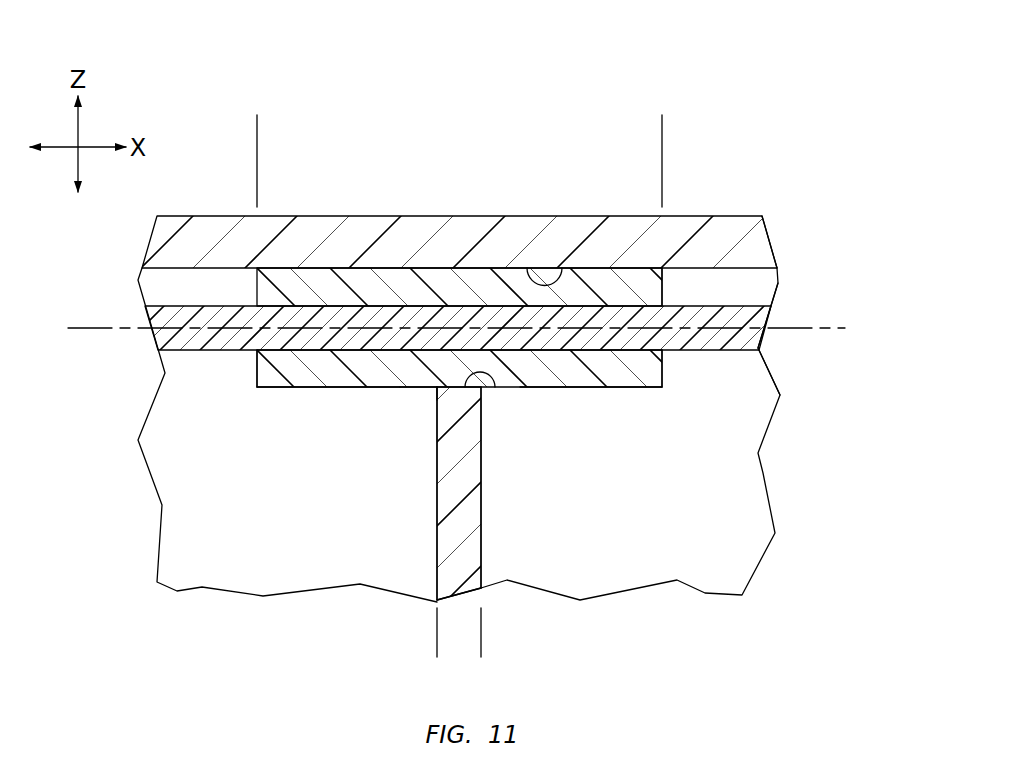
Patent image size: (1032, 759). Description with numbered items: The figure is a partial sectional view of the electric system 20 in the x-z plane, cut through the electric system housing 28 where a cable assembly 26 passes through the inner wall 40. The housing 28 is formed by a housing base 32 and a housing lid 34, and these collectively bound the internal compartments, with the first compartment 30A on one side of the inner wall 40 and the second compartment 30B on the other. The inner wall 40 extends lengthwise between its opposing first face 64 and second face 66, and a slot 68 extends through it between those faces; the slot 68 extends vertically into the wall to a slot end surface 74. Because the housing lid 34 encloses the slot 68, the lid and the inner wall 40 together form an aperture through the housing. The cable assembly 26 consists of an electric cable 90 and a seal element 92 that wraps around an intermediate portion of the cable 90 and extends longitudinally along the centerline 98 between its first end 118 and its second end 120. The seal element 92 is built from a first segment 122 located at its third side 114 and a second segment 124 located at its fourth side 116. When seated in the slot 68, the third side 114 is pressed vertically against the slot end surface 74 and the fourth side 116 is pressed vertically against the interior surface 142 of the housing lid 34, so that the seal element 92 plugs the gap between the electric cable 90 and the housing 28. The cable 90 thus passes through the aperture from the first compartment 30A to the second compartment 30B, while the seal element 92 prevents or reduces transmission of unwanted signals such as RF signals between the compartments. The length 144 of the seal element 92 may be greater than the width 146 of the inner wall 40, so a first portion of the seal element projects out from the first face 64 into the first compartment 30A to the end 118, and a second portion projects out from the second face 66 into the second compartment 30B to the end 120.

The structural assembly 20 is at (484, 153).
The cable assembly 26 is at (767, 340).
The electric system housing 28 is at (752, 211).
The first compartment 30A is at (224, 560).
The second compartment 30B is at (716, 552).
The housing base 32 is at (458, 597).
The housing lid 34 is at (772, 246).
The inner wall 40 is at (485, 498).
The inner wall first face 64 is at (437, 530).
The inner wall second face 66 is at (482, 537).
The slot 68 is at (432, 391).
The slot end surface 74 is at (494, 388).
The electric cable 90 is at (147, 338).
The seal element 92 is at (262, 400).
The centerline 98 is at (80, 322).
The seal element third side 114 is at (315, 387).
The seal element fourth side 116 is at (423, 268).
The seal element first end 118 is at (257, 370).
The seal element second end 120 is at (662, 387).
The seal element first segment 122 is at (667, 368).
The seal element second segment 124 is at (667, 290).
The interior surface 142 is at (561, 267).
The length 144 is at (662, 131).
The width 146 is at (380, 642).